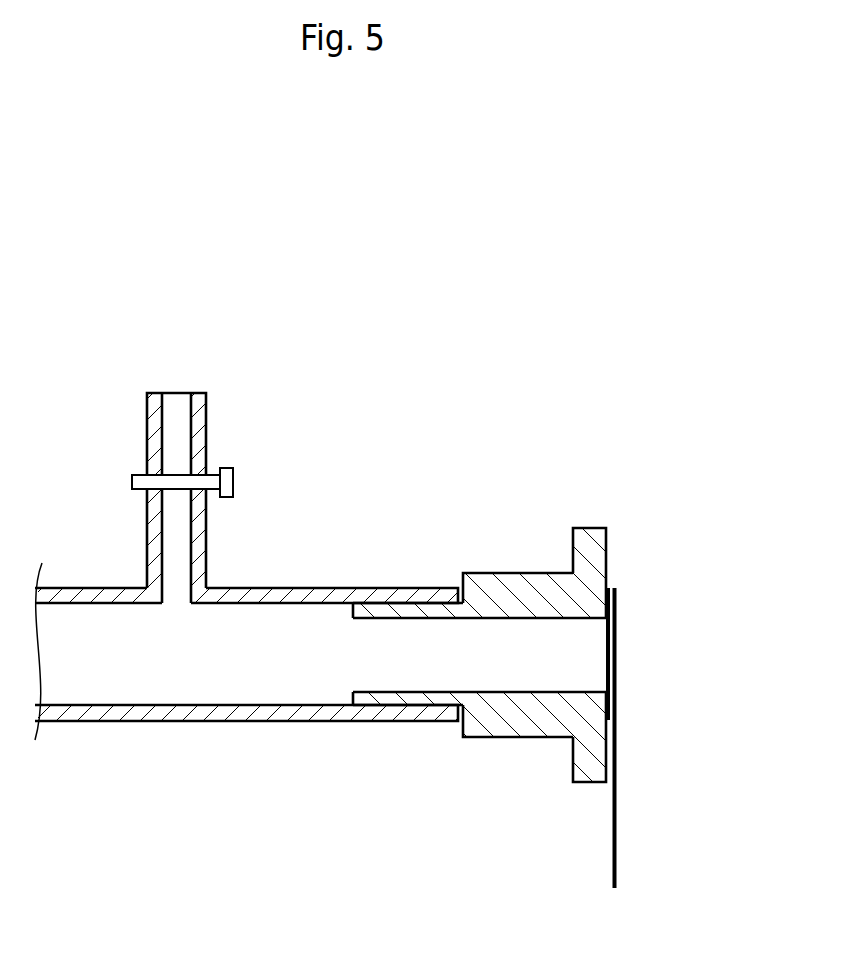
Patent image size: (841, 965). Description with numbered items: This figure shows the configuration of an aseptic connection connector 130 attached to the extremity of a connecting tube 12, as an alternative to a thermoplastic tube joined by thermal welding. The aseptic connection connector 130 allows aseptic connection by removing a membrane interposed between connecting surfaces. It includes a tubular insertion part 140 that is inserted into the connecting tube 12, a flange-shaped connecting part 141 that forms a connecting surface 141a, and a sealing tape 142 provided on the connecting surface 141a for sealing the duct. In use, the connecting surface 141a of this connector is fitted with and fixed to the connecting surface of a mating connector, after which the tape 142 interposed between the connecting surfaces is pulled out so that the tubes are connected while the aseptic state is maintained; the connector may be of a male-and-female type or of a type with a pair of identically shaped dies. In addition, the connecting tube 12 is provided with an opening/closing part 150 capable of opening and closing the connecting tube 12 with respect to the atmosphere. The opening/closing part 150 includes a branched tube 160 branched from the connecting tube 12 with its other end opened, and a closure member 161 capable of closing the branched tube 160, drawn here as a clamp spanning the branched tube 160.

The connecting tube 12 is at (282, 588).
The aseptic connection connector 130 is at (526, 571).
The tubular insertion part 140 is at (427, 698).
The flange-shaped connecting part 141 is at (590, 785).
The connecting surface 141a is at (608, 565).
The sealing tape 142 is at (617, 654).
The opening/closing part 150 is at (187, 493).
The branched tube 160 is at (208, 432).
The closure member 161 is at (235, 478).